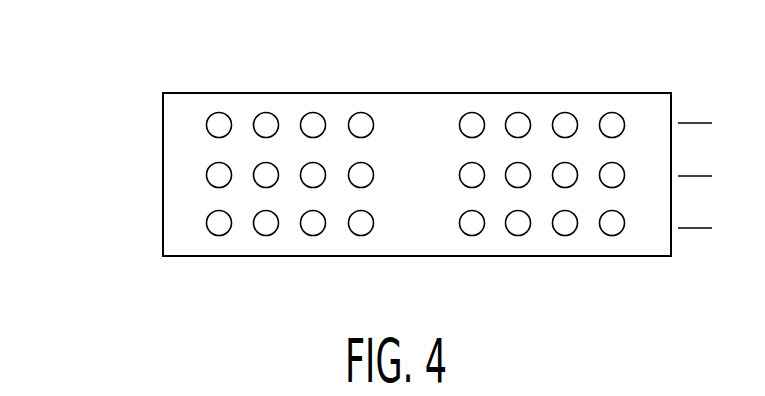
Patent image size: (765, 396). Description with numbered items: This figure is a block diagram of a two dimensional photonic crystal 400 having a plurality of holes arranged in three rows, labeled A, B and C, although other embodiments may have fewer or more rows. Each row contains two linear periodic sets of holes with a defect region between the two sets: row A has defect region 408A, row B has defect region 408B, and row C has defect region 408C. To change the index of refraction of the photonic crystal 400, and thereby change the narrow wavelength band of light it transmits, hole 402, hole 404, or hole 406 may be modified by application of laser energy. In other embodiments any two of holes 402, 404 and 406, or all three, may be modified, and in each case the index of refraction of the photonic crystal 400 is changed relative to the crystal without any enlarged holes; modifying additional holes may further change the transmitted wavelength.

The two dimensional photonic crystal 400 is at (373, 169).
The hole 402 is at (212, 114).
The hole 404 is at (206, 177).
The hole 406 is at (206, 225).
The defect region 408A is at (393, 126).
The defect region 408B is at (424, 167).
The defect region 408C is at (427, 227).